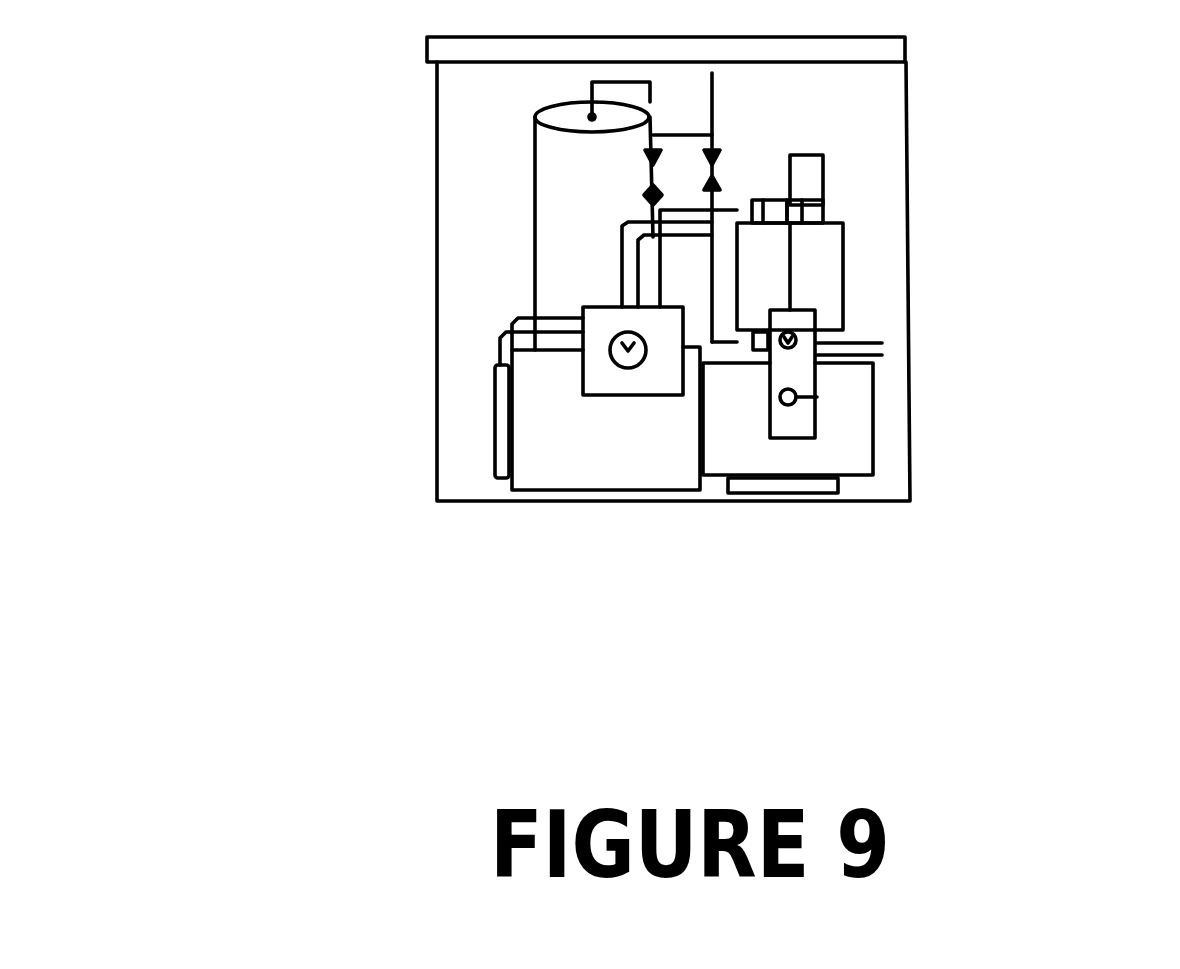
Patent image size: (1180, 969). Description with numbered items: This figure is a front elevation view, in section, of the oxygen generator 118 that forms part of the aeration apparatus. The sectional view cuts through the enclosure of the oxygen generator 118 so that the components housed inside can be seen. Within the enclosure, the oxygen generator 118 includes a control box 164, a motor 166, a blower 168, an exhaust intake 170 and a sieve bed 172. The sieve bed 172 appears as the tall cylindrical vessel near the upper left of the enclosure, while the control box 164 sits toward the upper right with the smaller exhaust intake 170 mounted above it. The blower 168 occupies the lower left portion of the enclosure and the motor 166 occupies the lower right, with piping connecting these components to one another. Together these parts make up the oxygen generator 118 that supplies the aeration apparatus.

The oxygen generator 118 is at (908, 210).
The control box 164 is at (828, 286).
The motor 166 is at (852, 443).
The blower 168 is at (605, 463).
The exhaust intake 170 is at (812, 180).
The sieve bed 172 is at (562, 177).